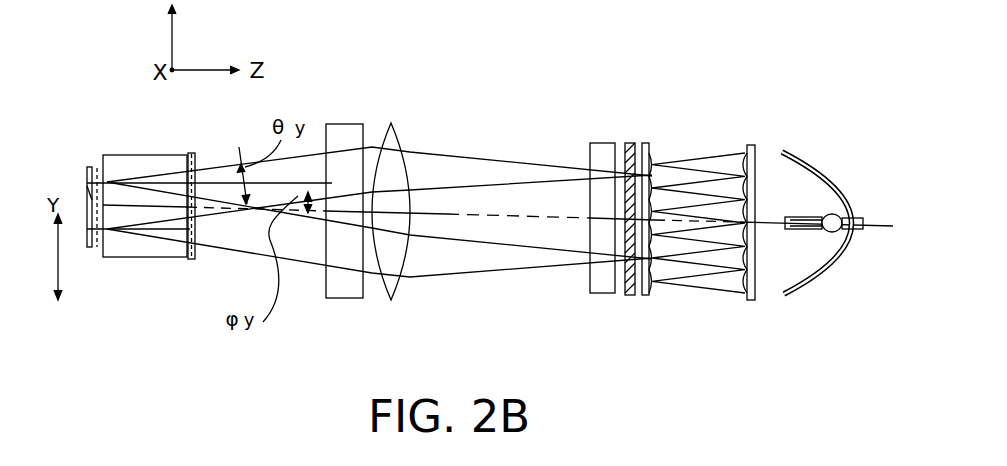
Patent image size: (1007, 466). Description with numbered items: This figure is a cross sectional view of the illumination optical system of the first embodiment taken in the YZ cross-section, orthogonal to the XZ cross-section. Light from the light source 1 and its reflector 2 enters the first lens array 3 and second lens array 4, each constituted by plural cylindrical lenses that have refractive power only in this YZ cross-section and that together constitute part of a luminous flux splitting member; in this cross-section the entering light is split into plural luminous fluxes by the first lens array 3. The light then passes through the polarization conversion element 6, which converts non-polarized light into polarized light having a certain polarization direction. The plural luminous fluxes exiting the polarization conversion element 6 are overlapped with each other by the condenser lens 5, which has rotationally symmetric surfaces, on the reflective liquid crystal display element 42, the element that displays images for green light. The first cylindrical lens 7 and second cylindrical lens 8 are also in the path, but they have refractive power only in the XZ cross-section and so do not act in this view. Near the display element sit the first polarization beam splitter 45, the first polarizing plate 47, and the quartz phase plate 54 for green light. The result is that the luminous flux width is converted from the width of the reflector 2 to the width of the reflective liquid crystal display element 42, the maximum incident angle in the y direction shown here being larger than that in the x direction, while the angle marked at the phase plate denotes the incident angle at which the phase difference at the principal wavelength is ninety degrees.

The light source 1 is at (837, 213).
The reflector 2 is at (783, 152).
The first lens array 3 is at (750, 145).
The second lens array 4 is at (644, 143).
The condenser lens 5 is at (392, 123).
The polarization conversion element 6 is at (630, 143).
The first cylindrical lens 7 is at (603, 143).
The second cylindrical lens 8 is at (345, 124).
The reflective liquid crystal display element 42 is at (87, 193).
The first polarization beam splitter 45 is at (143, 155).
The first polarizing plate 47 is at (193, 153).
The phase plate 54 is at (97, 167).